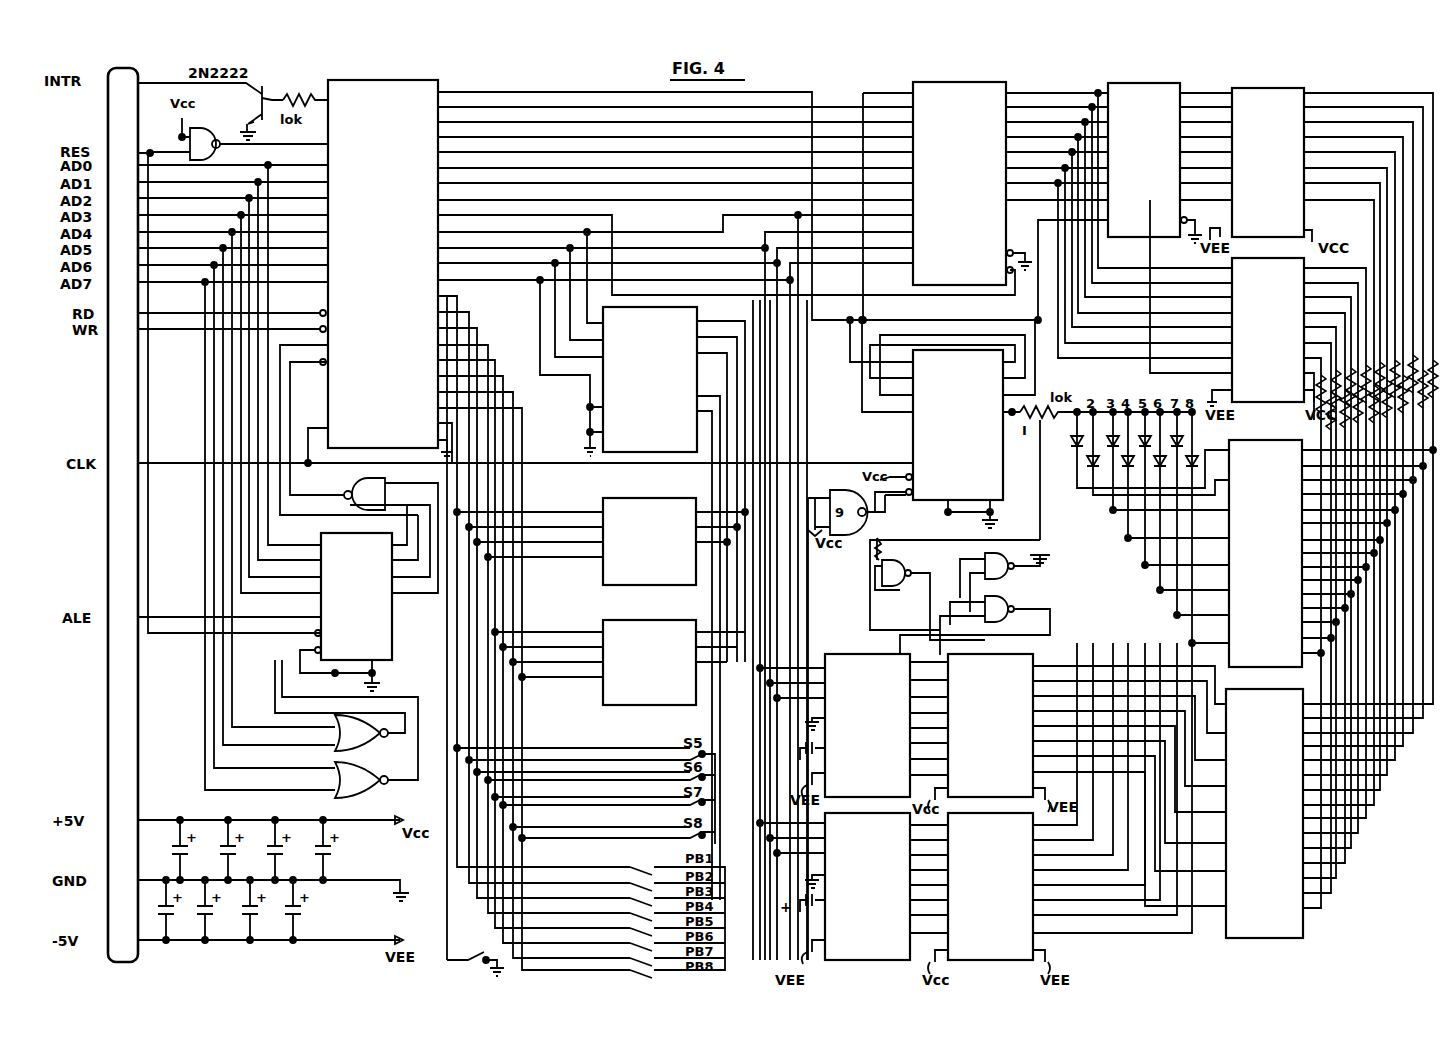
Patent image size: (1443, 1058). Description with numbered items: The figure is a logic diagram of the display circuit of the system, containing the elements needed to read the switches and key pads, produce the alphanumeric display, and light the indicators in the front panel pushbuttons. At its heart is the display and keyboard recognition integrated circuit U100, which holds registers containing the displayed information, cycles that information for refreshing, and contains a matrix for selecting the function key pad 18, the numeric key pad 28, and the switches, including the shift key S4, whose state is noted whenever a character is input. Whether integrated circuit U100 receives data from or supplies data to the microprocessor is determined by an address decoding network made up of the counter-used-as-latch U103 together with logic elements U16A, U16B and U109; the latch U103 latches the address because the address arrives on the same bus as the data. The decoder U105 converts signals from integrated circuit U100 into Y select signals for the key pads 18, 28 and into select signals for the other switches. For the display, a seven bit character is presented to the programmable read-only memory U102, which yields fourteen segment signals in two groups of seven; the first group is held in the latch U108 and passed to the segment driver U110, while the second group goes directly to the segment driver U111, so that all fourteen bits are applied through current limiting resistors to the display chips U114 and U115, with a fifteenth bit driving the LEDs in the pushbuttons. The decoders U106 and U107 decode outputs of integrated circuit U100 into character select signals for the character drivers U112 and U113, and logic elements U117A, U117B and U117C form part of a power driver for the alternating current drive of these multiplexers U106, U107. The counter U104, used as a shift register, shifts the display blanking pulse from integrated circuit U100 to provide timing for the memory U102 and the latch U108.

The display and keyboard recognition integrated circuit U100 is at (362, 84).
The programmable read-only memory U102 is at (940, 84).
The latch U103 is at (376, 633).
The counter used as shift register U104 is at (927, 432).
The decoder U105 is at (598, 377).
The decoder U106 is at (842, 654).
The decoder U107 is at (852, 962).
The latch U108 is at (1178, 70).
The logic element U109 is at (348, 496).
The segment driver U110 is at (1246, 84).
The segment driver U111 is at (1212, 382).
The character driver U112 is at (1005, 660).
The character driver U113 is at (1010, 962).
The display chip U114 is at (1248, 668).
The display chip U115 is at (1248, 940).
The logic element U16A is at (347, 717).
The logic element U16B is at (350, 738).
The logic element U117A is at (926, 564).
The logic element U117B is at (1018, 582).
The logic element U117C is at (1008, 625).
The function key pad 18 is at (604, 576).
The numeric key pad 28 is at (610, 706).
The shift key S4 is at (475, 955).